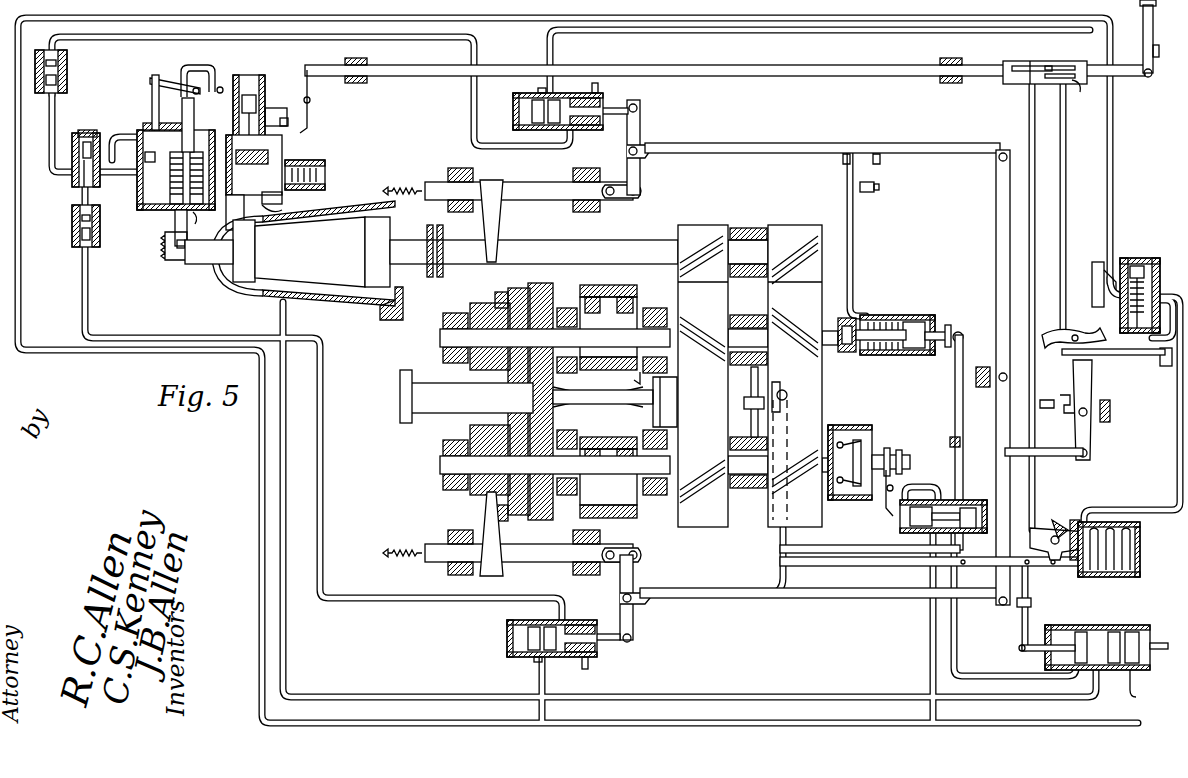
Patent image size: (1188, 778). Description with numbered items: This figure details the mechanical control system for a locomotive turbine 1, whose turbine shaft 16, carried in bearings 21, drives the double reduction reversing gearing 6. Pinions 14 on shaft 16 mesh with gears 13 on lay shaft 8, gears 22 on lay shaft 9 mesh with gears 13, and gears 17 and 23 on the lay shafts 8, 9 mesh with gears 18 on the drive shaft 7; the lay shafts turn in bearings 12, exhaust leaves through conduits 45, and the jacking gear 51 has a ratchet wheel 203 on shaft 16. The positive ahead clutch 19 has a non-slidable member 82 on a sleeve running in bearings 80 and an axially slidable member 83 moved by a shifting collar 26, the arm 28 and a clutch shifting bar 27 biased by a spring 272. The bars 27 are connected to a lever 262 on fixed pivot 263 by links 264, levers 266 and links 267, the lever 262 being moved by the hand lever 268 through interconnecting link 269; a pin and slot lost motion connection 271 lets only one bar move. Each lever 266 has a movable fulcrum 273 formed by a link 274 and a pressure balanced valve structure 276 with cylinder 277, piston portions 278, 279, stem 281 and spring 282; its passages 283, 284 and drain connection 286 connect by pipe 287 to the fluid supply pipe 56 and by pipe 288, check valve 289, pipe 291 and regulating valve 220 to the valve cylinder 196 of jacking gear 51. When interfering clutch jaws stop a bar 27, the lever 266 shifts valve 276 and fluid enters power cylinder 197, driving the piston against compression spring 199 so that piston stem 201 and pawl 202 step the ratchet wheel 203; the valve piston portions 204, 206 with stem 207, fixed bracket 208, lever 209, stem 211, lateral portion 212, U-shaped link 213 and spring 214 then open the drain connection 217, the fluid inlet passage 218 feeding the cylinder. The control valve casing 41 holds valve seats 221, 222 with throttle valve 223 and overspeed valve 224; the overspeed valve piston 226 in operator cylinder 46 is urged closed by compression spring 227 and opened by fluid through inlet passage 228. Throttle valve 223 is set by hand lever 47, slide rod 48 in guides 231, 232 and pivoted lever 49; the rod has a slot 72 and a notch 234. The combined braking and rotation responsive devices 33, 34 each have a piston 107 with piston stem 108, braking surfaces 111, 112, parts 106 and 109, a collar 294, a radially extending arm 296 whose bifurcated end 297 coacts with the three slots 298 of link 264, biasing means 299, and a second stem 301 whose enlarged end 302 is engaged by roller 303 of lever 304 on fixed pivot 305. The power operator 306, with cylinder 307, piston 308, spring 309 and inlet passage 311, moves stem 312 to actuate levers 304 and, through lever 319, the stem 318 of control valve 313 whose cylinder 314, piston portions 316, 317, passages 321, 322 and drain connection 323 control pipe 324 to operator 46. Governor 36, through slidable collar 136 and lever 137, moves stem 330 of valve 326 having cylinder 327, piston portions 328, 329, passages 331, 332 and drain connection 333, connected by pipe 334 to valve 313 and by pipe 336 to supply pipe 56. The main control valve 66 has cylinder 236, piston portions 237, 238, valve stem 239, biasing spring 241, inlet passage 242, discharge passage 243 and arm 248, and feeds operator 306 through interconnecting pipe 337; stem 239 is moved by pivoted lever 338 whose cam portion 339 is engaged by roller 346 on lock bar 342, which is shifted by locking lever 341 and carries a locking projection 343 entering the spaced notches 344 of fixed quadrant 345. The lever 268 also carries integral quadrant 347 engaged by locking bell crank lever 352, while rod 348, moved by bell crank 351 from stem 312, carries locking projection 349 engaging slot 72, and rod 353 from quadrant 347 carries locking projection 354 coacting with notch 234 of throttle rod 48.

The turbine 1 is at (303, 253).
The gearing 6 is at (710, 226).
The drive shaft 7 is at (426, 382).
The lay shaft 8 is at (440, 336).
The lay shaft 9 is at (440, 463).
The bearings 12 is at (762, 310).
The gears 13 is at (746, 296).
The pinions 14 is at (755, 376).
The turbine shaft 16 is at (476, 251).
The gears 17 is at (608, 284).
The gears 18 is at (574, 396).
The positive ahead clutch 19 is at (521, 389).
The bearings 21 is at (473, 224).
The gears 22 is at (752, 513).
The gears 23 is at (600, 522).
The shifting collar 26 is at (474, 370).
The clutch shifting bar 27 is at (524, 182).
The laterally extending arm 28 is at (496, 216).
The combined braking and rotation responsive device 33 is at (883, 325).
The combined braking and rotation responsive device 34 is at (748, 402).
The speed governor 36 is at (861, 428).
The control valve casing 41 is at (294, 121).
The conduits 45 is at (378, 320).
The fluid actuated valve operator 46 is at (323, 164).
The hand lever 47 is at (1153, 14).
The slide rod 48 is at (837, 62).
The pivoted lever 49 is at (310, 88).
The jacking gear mechanism 51 is at (144, 108).
The fluid supply pipe 56 is at (736, 18).
The main control valve 66 is at (1176, 293).
The slot 72 is at (1028, 64).
The bearings 80 is at (611, 399).
The non-slidable clutch member 82 is at (539, 282).
The axially slidable clutch member 83 is at (516, 294).
The spring seat 106 is at (900, 370).
The piston 107 is at (910, 322).
The piston stem 108 is at (869, 320).
The spring seat 109 is at (878, 376).
The braking surface 111 is at (838, 378).
The braking surface 112 is at (838, 366).
The slidable collar 136 is at (889, 452).
The lever 137 is at (886, 504).
The valve cylinder 196 is at (138, 206).
The power cylinder 197 is at (170, 219).
The compression spring 199 is at (200, 178).
The piston stem 201 is at (210, 219).
The pawl 202 is at (174, 239).
The ratchet wheel 203 is at (166, 256).
The piston portion 204 is at (143, 154).
The piston portion 206 is at (138, 197).
The valve stem 207 is at (150, 84).
The fixed bracket 208 is at (198, 83).
The lever 209 is at (165, 74).
The piston stem 211 is at (182, 104).
The laterally extending portion 212 is at (240, 82).
The U-shaped link 213 is at (215, 62).
The spring 214 is at (222, 84).
The drain connection 217 is at (131, 134).
The fluid inlet passage 218 is at (138, 166).
The regulating valve 220 is at (75, 154).
The valve seat 221 is at (271, 110).
The valve seat 222 is at (243, 212).
The throttle valve 223 is at (288, 114).
The overspeed valve 224 is at (253, 153).
The piston 226 is at (288, 194).
The compression spring 227 is at (340, 171).
The fluid inlet passage 228 is at (288, 206).
The guide 231 is at (354, 83).
The guide 232 is at (957, 86).
The notch 234 is at (1066, 64).
The cylinder 236 is at (1126, 257).
The piston portion 237 is at (1139, 266).
The piston portion 238 is at (1150, 266).
The valve stem 239 is at (1164, 344).
The biasing spring 241 is at (1106, 318).
The fluid inlet passage 242 is at (1102, 278).
The discharge passage 243 is at (1172, 301).
The arm 248 is at (1150, 338).
The lever 262 is at (992, 238).
The fixed pivot 263 is at (982, 366).
The links 264 is at (736, 137).
The levers 266 is at (643, 178).
The links 267 is at (616, 200).
The hand lever 268 is at (1077, 392).
The interconnecting link 269 is at (1051, 456).
The pin and slot lost motion connection 271 is at (658, 149).
The springs 272 is at (388, 178).
The movable fulcrum 273 is at (645, 109).
The link 274 is at (639, 101).
The pressure balanced piston type valve structure 276 is at (541, 375).
The cylinder 277 is at (568, 94).
The piston portion 278 is at (511, 370).
The piston portion 279 is at (546, 370).
The stem 281 is at (612, 107).
The spring 282 is at (595, 375).
The fluid passage 283 is at (541, 89).
The fluid passage 284 is at (574, 138).
The drain connection 286 is at (598, 88).
The pipe 287 is at (559, 46).
The pipe 288 is at (473, 104).
The check valve 289 is at (67, 66).
The pipe 291 is at (78, 197).
The collar 294 is at (676, 376).
The radially extending arm 296 is at (856, 241).
The bifurcated outer end 297 is at (854, 150).
The slots 298 is at (844, 164).
The biasing means 299 is at (872, 192).
The second stem 301 is at (946, 326).
The enlarged end portion 302 is at (954, 330).
The roller 303 is at (787, 393).
The lever 304 is at (954, 417).
The fixed pivot 305 is at (952, 438).
The power operator 306 is at (1124, 549).
The cylinder 307 is at (1141, 574).
The piston 308 is at (1070, 592).
The spring 309 is at (1137, 553).
The fluid inlet passage 311 is at (1090, 526).
The stem 312 is at (832, 570).
The control valve 313 is at (1080, 631).
The cylinder 314 is at (1130, 636).
The piston portion 316 is at (1066, 624).
The piston portion 317 is at (1114, 631).
The stem 318 is at (1047, 651).
The lever 319 is at (1026, 592).
The fluid passage 321 is at (1072, 663).
The fluid passage 322 is at (1098, 674).
The drain connection 323 is at (1134, 657).
The pipe 324 is at (288, 321).
The valve 326 is at (943, 505).
The cylinder 327 is at (915, 532).
The piston portion 328 is at (920, 490).
The piston portion 329 is at (970, 506).
The stem 330 is at (900, 516).
The fluid passage 331 is at (925, 535).
The fluid passage 332 is at (954, 530).
The drain connection 333 is at (914, 536).
The pipe 334 is at (932, 640).
The pipe 336 is at (954, 648).
The interconnecting pipe 337 is at (1179, 405).
The pivoted lever 338 is at (1166, 368).
The cam portion 339 is at (1092, 367).
The locking lever 341 is at (1092, 262).
The bar 342 is at (1122, 303).
The locking projection 343 is at (1096, 351).
The spaced notches 344 is at (1062, 350).
The fixed quadrant 345 is at (1045, 332).
The roller 346 is at (1062, 356).
The integral quadrant 347 is at (1066, 382).
The rod 348 is at (1027, 125).
The locking projection 349 is at (1037, 67).
The bell crank 351 is at (1045, 528).
The locking bell crank lever 352 is at (1052, 403).
The rod 353 is at (1070, 160).
The locking projection 354 is at (1088, 90).